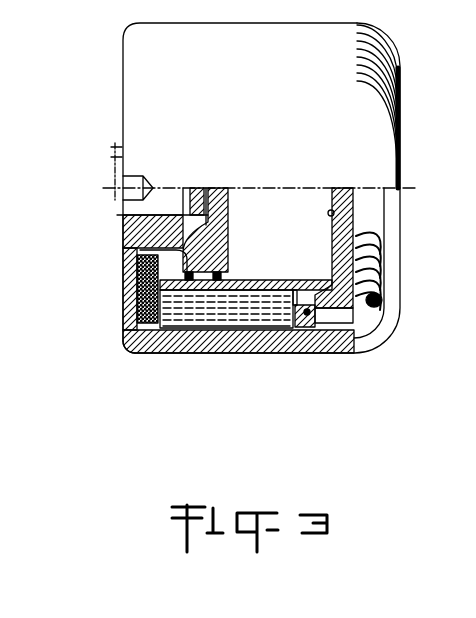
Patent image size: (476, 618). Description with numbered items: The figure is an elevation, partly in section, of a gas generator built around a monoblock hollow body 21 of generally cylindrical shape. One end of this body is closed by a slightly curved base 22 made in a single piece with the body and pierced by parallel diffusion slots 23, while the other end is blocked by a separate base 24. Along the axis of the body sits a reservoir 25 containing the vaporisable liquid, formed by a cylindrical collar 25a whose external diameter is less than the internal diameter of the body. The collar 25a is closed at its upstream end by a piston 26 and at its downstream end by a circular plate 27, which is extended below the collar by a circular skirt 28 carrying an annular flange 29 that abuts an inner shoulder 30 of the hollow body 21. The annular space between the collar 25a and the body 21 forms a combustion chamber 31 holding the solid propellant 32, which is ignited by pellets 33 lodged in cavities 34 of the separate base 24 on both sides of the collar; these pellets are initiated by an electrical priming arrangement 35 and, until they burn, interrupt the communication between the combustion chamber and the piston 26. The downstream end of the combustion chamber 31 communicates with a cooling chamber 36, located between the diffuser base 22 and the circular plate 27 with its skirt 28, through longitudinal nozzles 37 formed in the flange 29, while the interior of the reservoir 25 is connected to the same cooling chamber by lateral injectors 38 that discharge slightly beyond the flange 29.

The monoblock hollow body 21 is at (165, 340).
The base 22 is at (390, 307).
The diffusion slots 23 is at (360, 258).
The separate base 24 is at (138, 218).
The reservoir 25 is at (287, 212).
The cylindrical collar 25a is at (261, 283).
The piston 26 is at (220, 195).
The circular plate 27 is at (348, 200).
The circular skirt 28 is at (365, 313).
The annular flange 29 is at (303, 323).
The inner shoulder 30 is at (310, 327).
The combustion chamber 31 is at (277, 323).
The solid propellant 32 is at (215, 317).
The pellets 33 is at (132, 318).
The cavities 34 is at (143, 246).
The electrical priming arrangement 35 is at (140, 278).
The cooling chamber 36 is at (372, 212).
The longitudinal nozzles 37 is at (300, 307).
The lateral injectors 38 is at (327, 280).